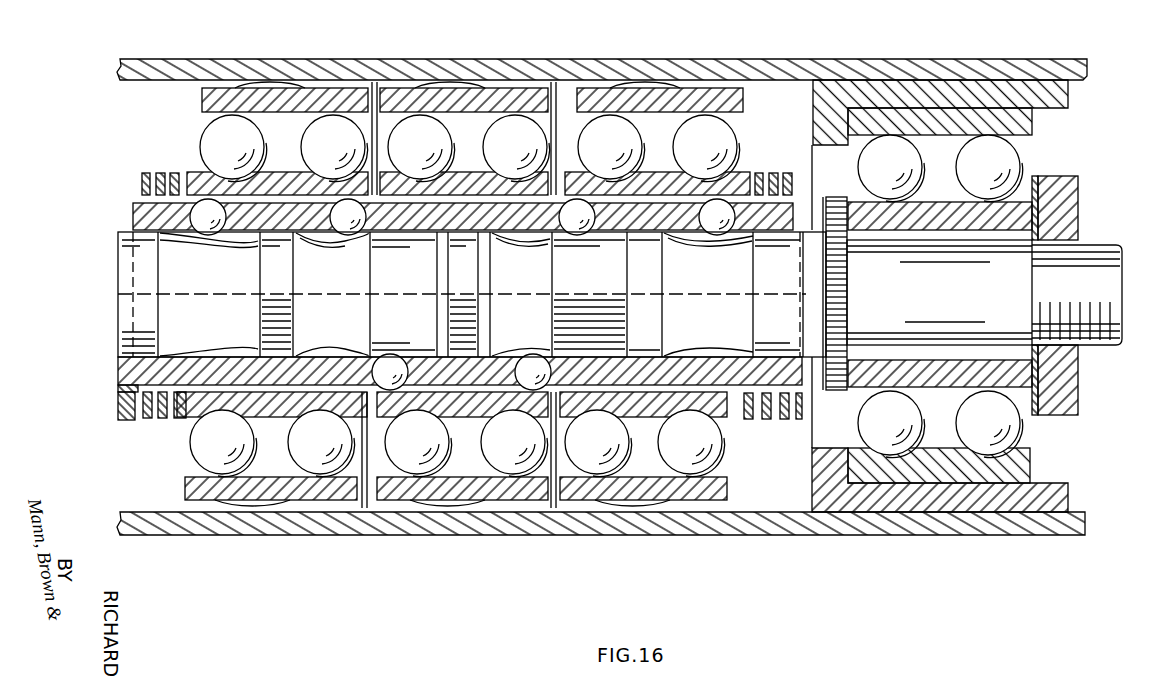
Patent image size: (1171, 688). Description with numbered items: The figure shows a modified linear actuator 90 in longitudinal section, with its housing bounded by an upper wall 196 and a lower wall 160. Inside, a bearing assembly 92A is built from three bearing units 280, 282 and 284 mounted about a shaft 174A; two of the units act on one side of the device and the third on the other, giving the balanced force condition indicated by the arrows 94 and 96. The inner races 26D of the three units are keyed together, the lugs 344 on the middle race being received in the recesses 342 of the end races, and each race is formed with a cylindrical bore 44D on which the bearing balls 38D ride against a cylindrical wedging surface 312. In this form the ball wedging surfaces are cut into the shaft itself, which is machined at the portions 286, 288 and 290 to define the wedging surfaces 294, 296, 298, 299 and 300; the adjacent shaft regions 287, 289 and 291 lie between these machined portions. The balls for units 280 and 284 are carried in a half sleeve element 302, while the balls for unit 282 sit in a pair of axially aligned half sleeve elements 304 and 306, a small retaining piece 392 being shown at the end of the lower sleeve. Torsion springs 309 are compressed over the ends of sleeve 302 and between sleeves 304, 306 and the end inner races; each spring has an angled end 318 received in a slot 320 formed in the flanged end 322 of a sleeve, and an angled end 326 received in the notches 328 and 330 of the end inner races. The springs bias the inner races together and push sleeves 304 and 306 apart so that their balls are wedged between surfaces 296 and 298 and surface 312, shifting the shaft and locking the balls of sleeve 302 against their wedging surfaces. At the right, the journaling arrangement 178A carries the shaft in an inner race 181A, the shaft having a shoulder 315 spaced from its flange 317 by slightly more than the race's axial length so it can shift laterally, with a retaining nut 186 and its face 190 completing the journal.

The linear actuator 90 is at (969, 59).
The housing top wall 196 is at (898, 60).
The housing bottom wall 160 is at (978, 505).
The bearing unit 280 is at (248, 516).
The bearing unit 282 is at (433, 516).
The bearing unit 284 is at (643, 518).
The bearing assembly 92A is at (776, 100).
The inner race 26D is at (283, 185).
The cylindrical bore 44D is at (238, 201).
The lug 344 is at (376, 100).
The half sleeve element 302 is at (133, 220).
The half sleeve element 304 is at (135, 370).
The retainer 392 is at (123, 387).
The cylindrical wedging surface 312 is at (290, 200).
The recess 342 is at (606, 296).
The torsion spring 309 is at (784, 175).
The slot 320 is at (118, 396).
The angled end 318 is at (121, 418).
The flanged end 322 is at (147, 420).
The angled end 326 is at (178, 421).
The notch 328 is at (182, 430).
The machined portion of shaft 286 is at (185, 310).
The shaft section 287 is at (304, 284).
The wedging surface 294 is at (250, 257).
The machined portion of shaft 288 is at (390, 312).
The shaft section 289 is at (500, 273).
The wedging surface 298 is at (478, 282).
The wedging surface 296 is at (457, 254).
The machined portion of shaft 290 is at (576, 311).
The wedging surface 299 is at (667, 294).
The shaft section 291 is at (714, 316).
The wedging surface 300 is at (668, 306).
The bearing ball 38D is at (205, 238).
The flange 317 is at (838, 275).
The shaft 174A is at (1012, 258).
The inner race 181A is at (1028, 213).
The journaling arrangement 178A is at (1040, 194).
The nut flange 186 is at (1072, 365).
The shoulder 315 is at (1043, 345).
The nut face 190 is at (1042, 412).
The half sleeve element 306 is at (693, 390).
The notch 330 is at (732, 412).
The arrow 94 is at (288, 58).
The arrow 96 is at (463, 530).